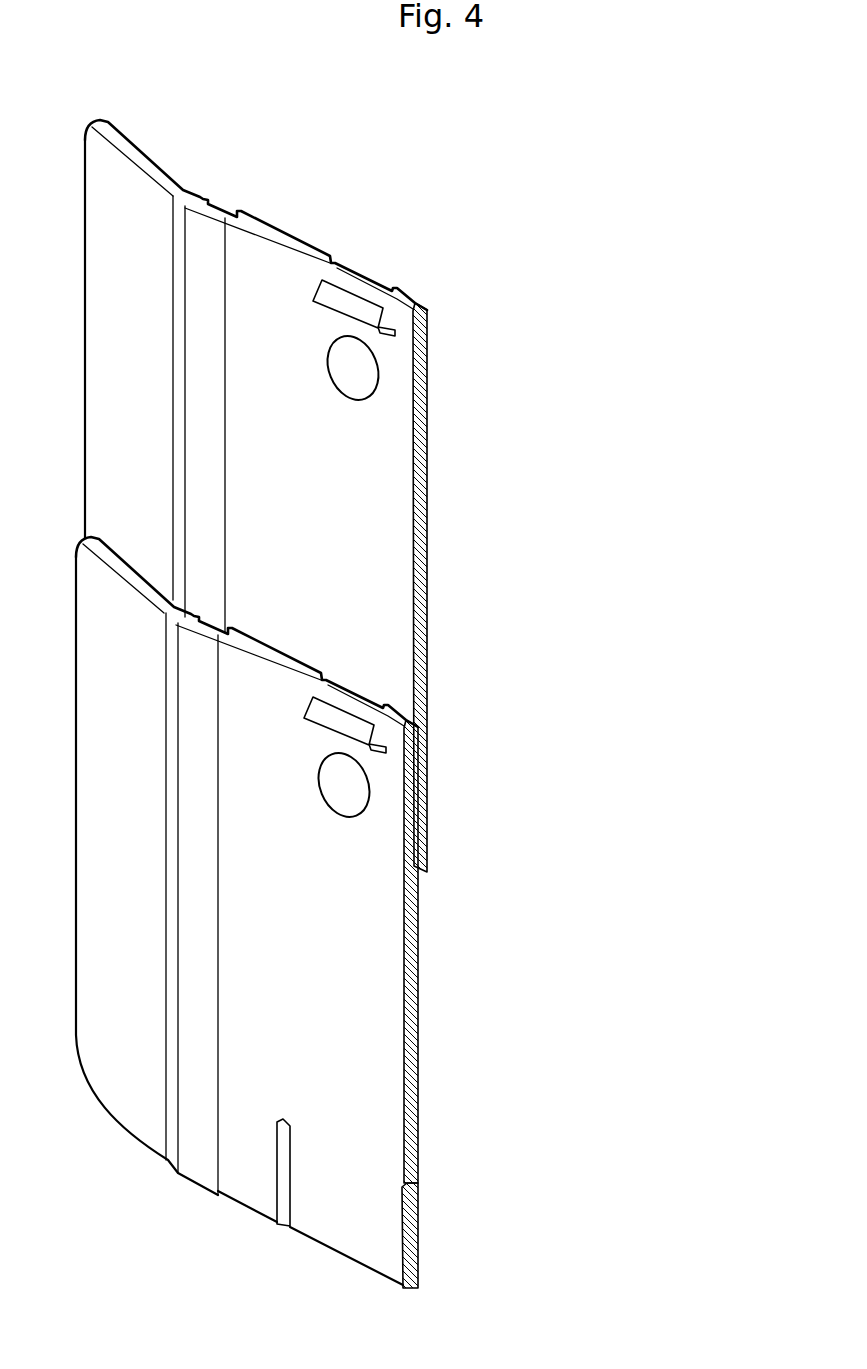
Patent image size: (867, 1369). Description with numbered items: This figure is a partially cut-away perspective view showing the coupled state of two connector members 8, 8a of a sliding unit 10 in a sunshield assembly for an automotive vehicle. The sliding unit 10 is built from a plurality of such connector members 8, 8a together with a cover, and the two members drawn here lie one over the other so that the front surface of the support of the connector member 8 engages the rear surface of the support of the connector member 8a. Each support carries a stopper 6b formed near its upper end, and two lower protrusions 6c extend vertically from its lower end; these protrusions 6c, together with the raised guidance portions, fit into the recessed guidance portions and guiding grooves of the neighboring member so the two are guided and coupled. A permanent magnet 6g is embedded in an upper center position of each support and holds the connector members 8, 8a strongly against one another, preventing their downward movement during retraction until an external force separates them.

The stopper 6b is at (357, 305).
The permanent magnet 6g is at (370, 375).
The connector member 8 is at (392, 515).
The connector member 8a is at (398, 990).
The lower protrusions 6c is at (400, 1237).
The sliding unit 10 is at (575, 573).